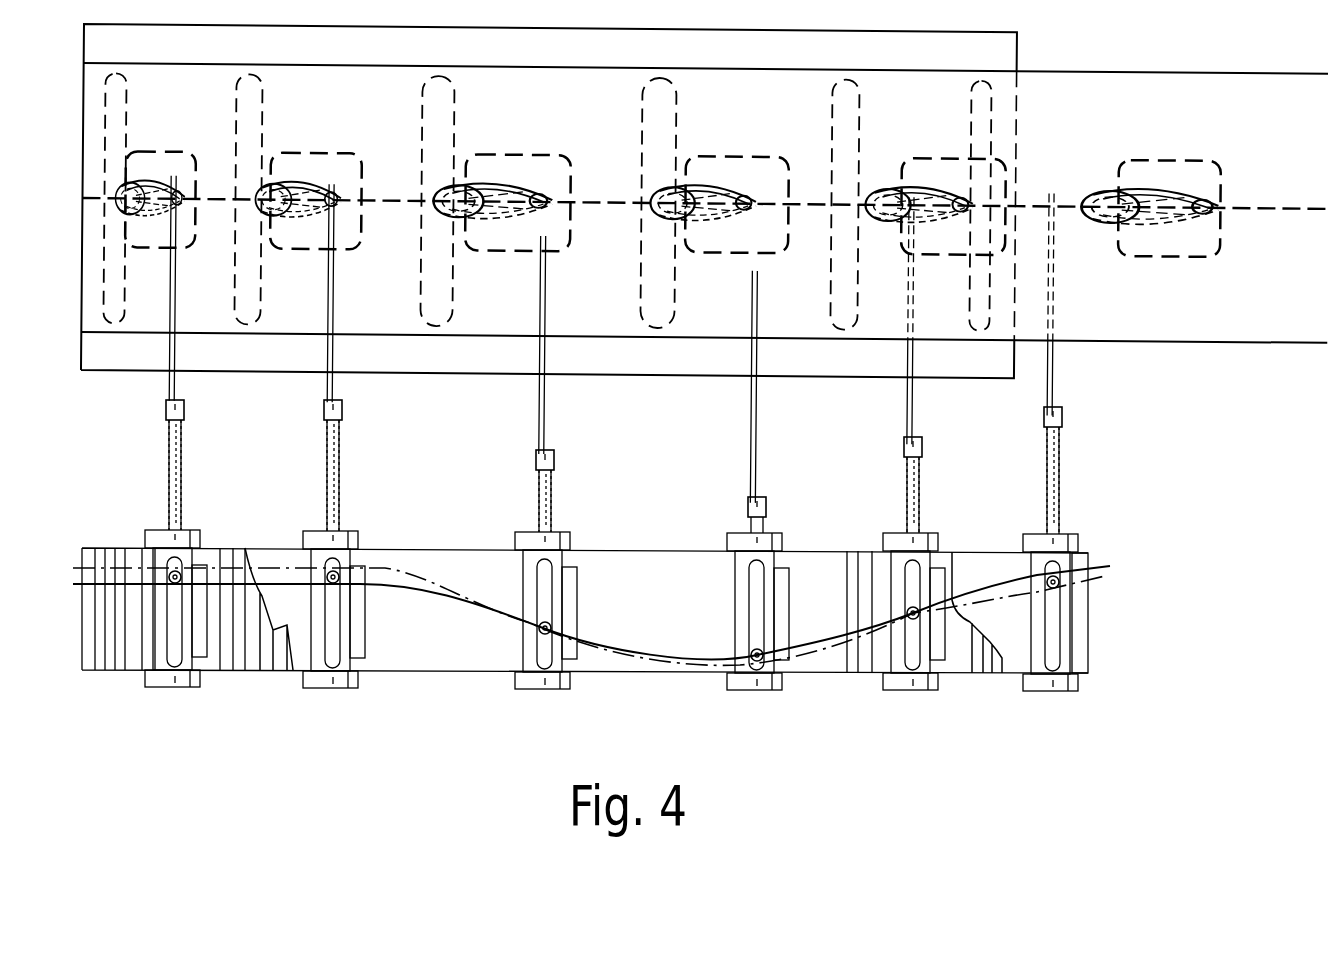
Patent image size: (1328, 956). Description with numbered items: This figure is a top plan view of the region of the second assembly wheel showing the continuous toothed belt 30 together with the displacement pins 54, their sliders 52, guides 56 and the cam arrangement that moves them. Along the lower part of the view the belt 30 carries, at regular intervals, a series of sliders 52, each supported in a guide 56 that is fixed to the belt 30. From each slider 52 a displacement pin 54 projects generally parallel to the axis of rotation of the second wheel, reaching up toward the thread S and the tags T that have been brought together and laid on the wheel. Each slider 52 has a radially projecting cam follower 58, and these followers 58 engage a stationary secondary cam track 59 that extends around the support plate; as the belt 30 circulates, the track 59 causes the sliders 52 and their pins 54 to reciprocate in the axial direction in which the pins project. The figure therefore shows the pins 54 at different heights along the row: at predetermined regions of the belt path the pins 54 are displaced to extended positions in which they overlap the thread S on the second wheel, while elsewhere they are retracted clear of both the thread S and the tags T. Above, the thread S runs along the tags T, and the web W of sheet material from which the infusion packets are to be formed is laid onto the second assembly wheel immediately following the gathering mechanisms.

The continuous toothed belt 30 is at (127, 648).
The slider 52 is at (178, 470).
The displacement pin 54 is at (170, 383).
The guide 56 is at (738, 580).
The cam follower 58 is at (166, 572).
The secondary cam track 59 is at (640, 650).
The thread S is at (1268, 210).
The tag T is at (1155, 248).
The web W is at (1160, 337).